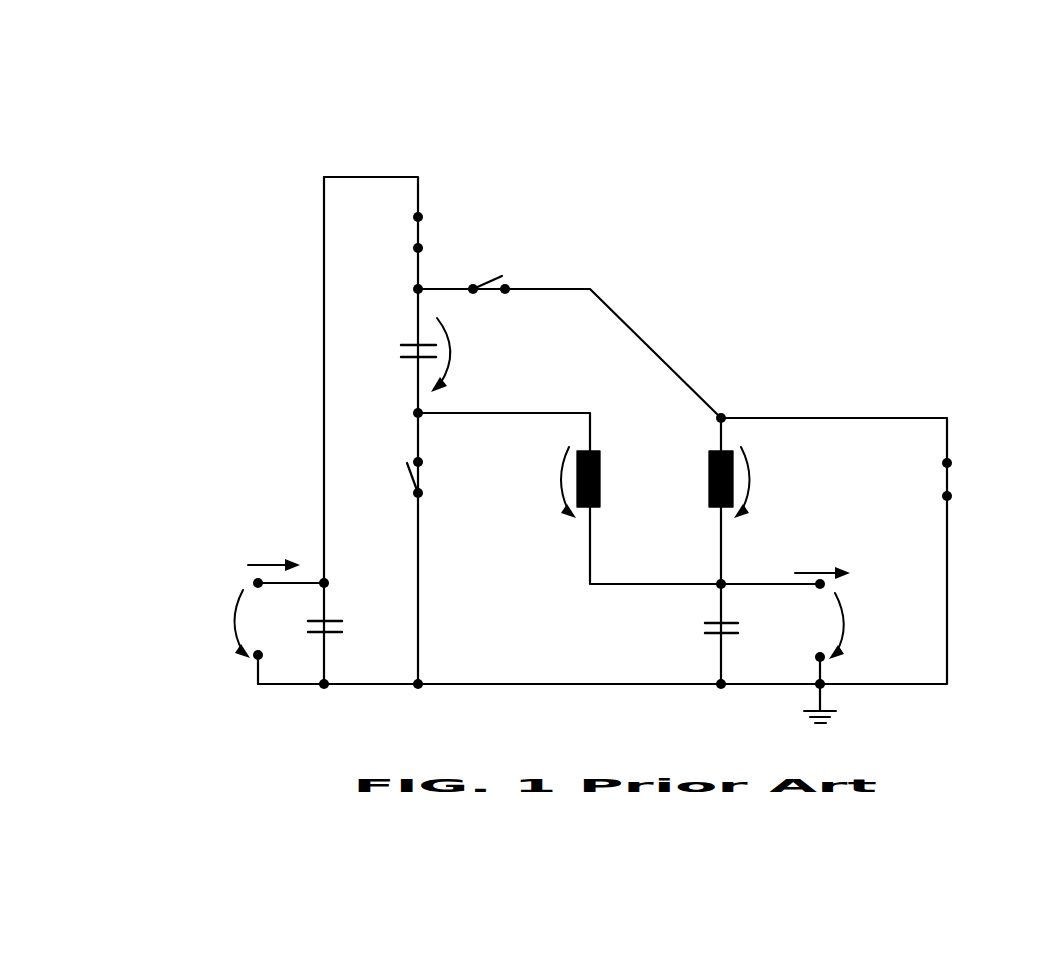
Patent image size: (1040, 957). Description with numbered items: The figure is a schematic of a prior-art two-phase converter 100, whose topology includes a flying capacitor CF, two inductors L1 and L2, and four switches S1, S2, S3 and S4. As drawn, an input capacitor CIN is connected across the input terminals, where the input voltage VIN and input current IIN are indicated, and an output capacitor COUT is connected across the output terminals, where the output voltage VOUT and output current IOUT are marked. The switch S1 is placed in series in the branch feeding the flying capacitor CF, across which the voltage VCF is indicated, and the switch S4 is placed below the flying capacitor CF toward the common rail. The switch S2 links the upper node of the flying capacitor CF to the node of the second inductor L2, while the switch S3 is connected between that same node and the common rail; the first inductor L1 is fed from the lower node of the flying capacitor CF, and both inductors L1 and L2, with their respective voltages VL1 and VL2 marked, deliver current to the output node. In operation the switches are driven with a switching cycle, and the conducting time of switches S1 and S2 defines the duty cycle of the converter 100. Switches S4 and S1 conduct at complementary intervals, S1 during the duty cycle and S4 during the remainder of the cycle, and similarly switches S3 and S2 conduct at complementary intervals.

The converter 100 is at (276, 168).
The switch S1 is at (403, 232).
The switch S2 is at (489, 276).
The switch S3 is at (965, 479).
The switch S4 is at (400, 477).
The flying capacitor CF is at (401, 352).
The flying capacitor voltage VCF is at (458, 355).
The inductor L1 is at (604, 479).
The inductor L2 is at (704, 479).
The first inductor voltage VL1 is at (543, 482).
The second inductor voltage VL2 is at (762, 482).
The input capacitor CIN is at (302, 628).
The output capacitor COUT is at (685, 628).
The input current IIN is at (270, 554).
The input voltage VIN is at (218, 624).
The output current IOUT is at (814, 561).
The output voltage VOUT is at (816, 626).